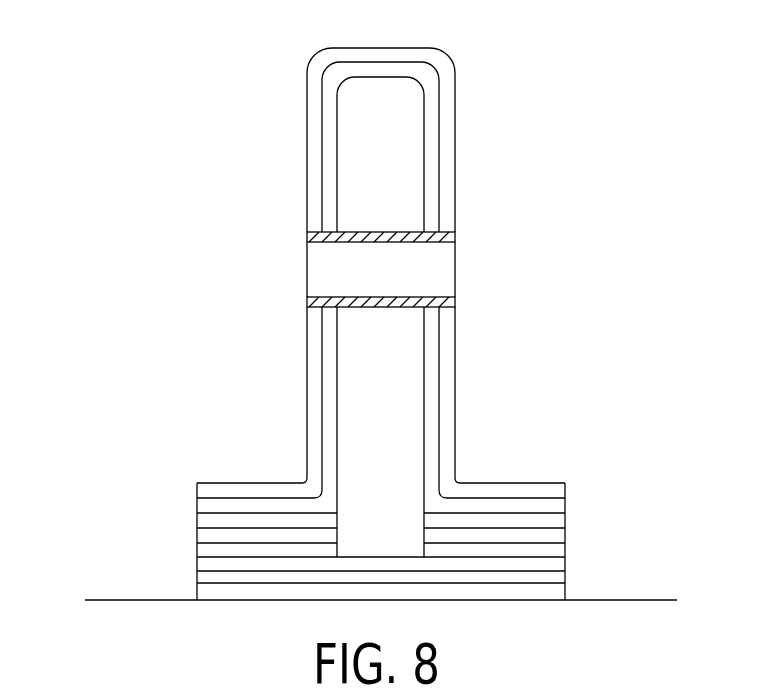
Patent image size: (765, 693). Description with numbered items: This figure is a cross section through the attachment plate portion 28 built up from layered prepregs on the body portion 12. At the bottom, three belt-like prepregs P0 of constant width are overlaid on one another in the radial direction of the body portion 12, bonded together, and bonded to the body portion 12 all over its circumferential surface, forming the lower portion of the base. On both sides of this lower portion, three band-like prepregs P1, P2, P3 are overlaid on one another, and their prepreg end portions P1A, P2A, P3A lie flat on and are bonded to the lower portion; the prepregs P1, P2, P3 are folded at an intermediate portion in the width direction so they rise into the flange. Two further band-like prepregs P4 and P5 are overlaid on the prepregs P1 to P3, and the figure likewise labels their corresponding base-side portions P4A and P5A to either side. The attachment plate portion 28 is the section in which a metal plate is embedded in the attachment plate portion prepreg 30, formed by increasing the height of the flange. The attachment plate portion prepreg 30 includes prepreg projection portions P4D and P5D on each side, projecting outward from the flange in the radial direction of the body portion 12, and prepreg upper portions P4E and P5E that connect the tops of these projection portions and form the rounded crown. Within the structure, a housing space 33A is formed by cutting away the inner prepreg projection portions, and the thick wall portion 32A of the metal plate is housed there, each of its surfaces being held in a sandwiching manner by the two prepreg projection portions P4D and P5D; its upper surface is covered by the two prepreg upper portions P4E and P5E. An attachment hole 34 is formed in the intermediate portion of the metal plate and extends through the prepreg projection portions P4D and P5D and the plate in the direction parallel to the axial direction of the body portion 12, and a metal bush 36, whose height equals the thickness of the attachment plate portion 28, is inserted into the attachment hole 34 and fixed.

The body portion 12 is at (88, 598).
The attachment plate portion 28 is at (360, 46).
The attachment plate portion prepreg 30 is at (455, 97).
The thick wall portion 32A is at (425, 365).
The housing space 33A is at (424, 443).
The attachment hole 34 is at (368, 297).
The metal bush 36 is at (440, 297).
The belt-like prepreg P0 is at (205, 593).
The band-like prepreg P1 is at (207, 550).
The band-like prepreg P2 is at (208, 535).
The band-like prepreg P3 is at (210, 522).
The band-like prepreg P4 is at (210, 505).
The band-like prepreg P5 is at (208, 488).
The prepreg end portion P1A is at (553, 551).
The prepreg end portion P2A is at (553, 538).
The prepreg end portion P3A is at (552, 522).
The flange portion of layer P4 P4A is at (553, 505).
The flange portion of layer P5 P5A is at (553, 490).
The prepreg projection portion P4D is at (330, 195).
The prepreg projection portion P5D is at (311, 156).
The prepreg upper portion P4E is at (380, 72).
The prepreg upper portion P5E is at (383, 56).